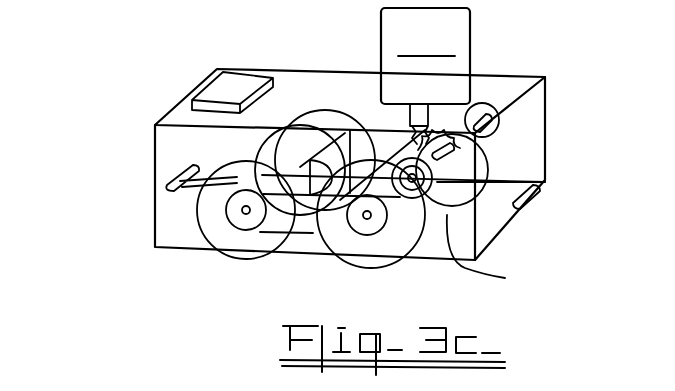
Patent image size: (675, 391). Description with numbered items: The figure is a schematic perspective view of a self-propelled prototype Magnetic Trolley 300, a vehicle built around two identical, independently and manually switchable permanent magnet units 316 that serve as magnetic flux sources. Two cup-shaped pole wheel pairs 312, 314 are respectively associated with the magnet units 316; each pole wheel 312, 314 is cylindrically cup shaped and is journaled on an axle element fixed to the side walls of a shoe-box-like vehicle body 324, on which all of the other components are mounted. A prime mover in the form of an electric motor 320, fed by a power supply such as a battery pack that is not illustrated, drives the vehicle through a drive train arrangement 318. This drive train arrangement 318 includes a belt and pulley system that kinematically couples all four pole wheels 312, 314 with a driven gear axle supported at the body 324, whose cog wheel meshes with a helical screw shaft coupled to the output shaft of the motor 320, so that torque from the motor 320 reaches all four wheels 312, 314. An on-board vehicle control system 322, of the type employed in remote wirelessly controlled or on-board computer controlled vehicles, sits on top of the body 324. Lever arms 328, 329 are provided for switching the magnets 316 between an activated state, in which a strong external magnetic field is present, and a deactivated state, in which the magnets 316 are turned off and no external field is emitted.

The Magnetic Trolley 300 is at (137, 157).
The pole wheel pair 312 is at (267, 238).
The pole wheel pair 314 is at (322, 128).
The permanent magnet unit 316 is at (297, 130).
The drive train arrangement 318 is at (473, 125).
The electric motor 320 is at (425, 76).
The on-board vehicle control system 322 is at (230, 90).
The vehicle body 324 is at (160, 218).
The lever arm 328 is at (545, 190).
The lever arm 329 is at (167, 185).